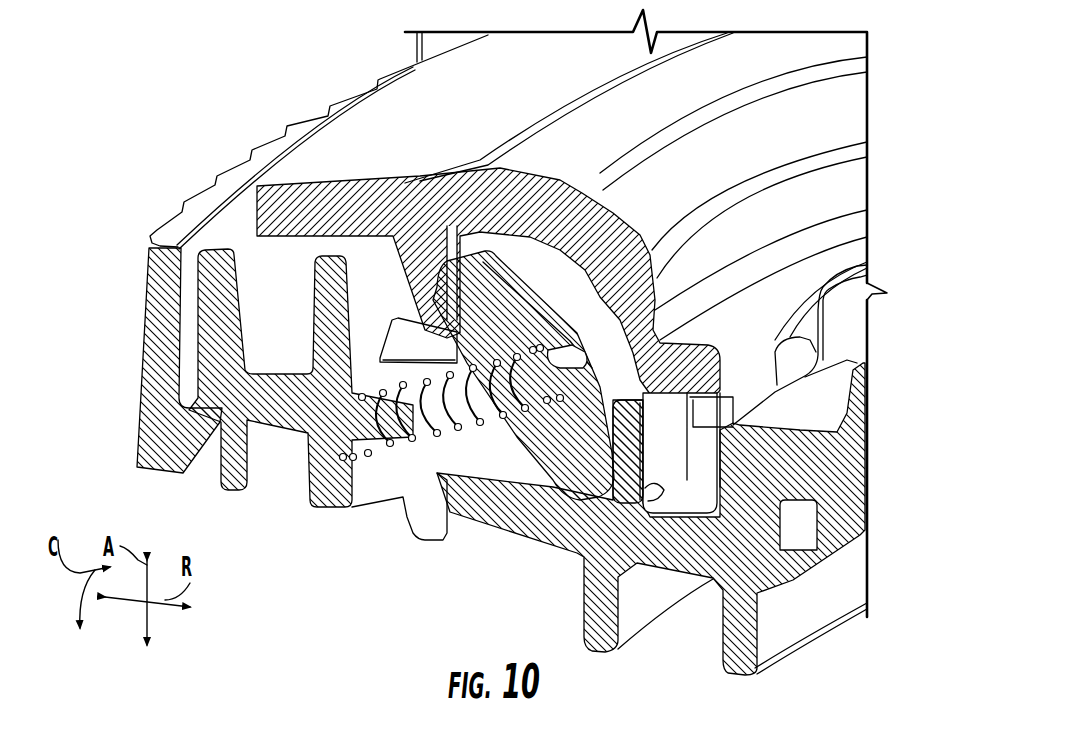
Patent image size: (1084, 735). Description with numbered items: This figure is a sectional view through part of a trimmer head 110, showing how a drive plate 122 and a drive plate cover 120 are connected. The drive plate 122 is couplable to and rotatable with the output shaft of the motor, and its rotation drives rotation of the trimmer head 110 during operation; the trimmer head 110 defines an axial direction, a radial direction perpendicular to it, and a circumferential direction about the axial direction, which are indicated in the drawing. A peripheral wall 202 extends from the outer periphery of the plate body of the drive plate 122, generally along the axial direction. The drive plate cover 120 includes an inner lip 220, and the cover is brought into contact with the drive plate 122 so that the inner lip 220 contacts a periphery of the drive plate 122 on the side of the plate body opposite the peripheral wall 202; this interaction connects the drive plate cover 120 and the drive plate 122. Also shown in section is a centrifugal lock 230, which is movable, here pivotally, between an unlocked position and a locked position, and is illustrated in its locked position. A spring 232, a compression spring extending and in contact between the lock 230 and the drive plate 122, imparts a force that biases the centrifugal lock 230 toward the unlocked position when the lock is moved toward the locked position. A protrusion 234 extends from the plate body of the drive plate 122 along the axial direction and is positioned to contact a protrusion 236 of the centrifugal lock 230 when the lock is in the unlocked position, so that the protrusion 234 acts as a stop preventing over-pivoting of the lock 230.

The trimmer head 110 is at (906, 76).
The drive plate cover 120 is at (126, 402).
The drive plate 122 is at (384, 548).
The peripheral wall 202 is at (217, 318).
The inner lip 220 is at (166, 455).
The centrifugal lock 230 is at (556, 458).
The spring 232 is at (468, 440).
The protrusion 234 is at (628, 410).
The protrusion 236 is at (618, 277).